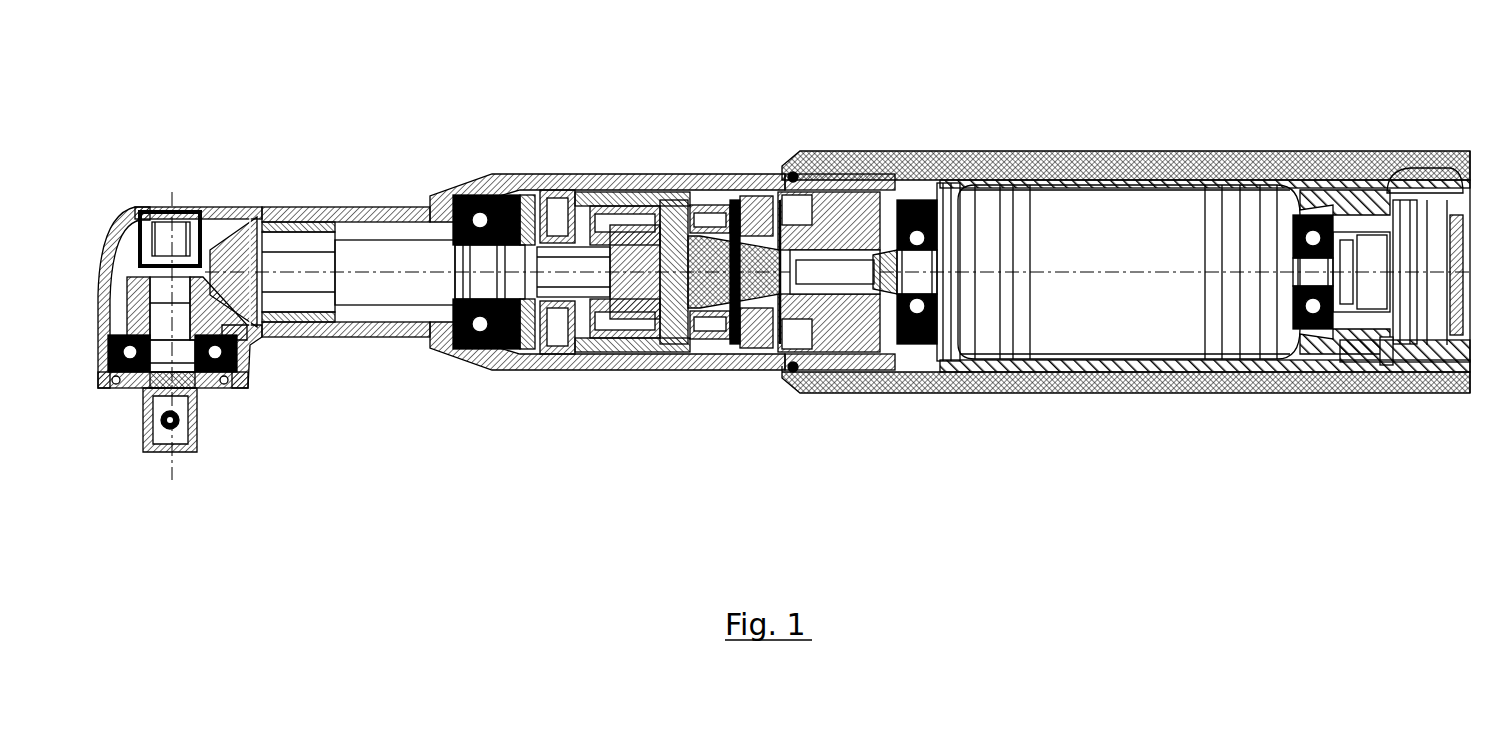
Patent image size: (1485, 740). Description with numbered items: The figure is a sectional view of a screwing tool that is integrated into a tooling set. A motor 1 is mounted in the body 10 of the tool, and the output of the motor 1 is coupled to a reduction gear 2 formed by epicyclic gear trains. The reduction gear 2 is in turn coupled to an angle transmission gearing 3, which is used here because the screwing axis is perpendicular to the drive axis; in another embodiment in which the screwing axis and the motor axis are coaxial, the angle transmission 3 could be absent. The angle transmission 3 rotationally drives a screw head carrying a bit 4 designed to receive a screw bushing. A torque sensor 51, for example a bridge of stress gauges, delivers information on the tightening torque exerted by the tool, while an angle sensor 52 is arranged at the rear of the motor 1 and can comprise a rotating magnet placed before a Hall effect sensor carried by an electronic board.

The motor 1 is at (963, 101).
The reduction gear 2 is at (393, 101).
The angle transmission gearing 3 is at (110, 101).
The bit 4 is at (197, 430).
The body 10 is at (1112, 392).
The torque sensor 51 is at (948, 101).
The angle sensor 52 is at (1287, 101).